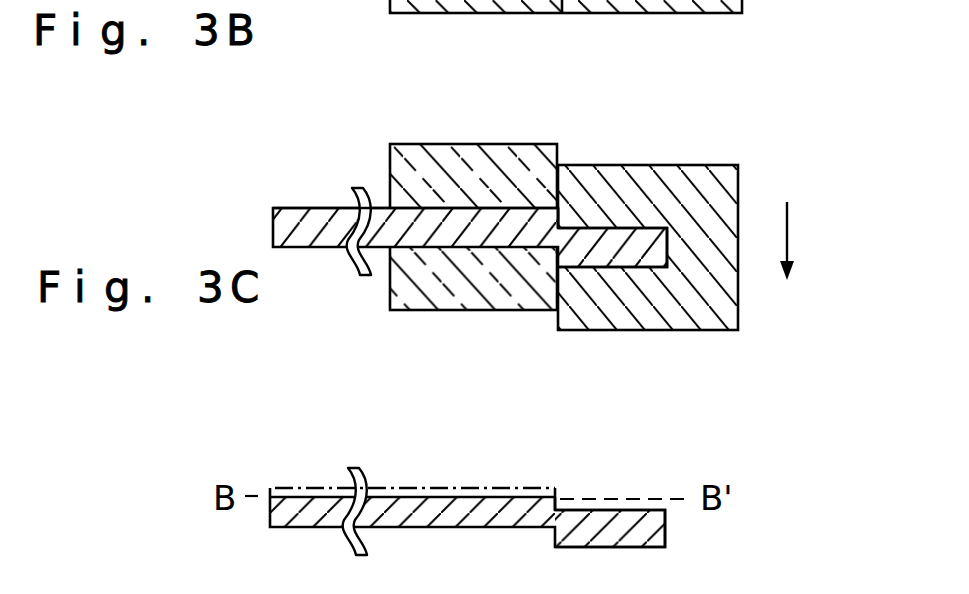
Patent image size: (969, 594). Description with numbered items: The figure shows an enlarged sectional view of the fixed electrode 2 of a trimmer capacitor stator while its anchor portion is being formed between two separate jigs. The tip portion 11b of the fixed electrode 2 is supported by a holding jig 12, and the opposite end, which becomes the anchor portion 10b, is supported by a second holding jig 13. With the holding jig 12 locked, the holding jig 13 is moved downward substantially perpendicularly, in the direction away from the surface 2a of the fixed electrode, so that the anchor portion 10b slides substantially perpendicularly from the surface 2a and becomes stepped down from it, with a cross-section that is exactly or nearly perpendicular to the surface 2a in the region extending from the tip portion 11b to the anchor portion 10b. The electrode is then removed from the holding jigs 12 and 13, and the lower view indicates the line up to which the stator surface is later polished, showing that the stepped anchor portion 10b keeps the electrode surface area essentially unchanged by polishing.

The fixed electrode 2 is at (318, 212).
The surface of the fixed electrode 2a is at (500, 208).
The tip portion 11b is at (562, 215).
The anchor portion 10b is at (647, 237).
The holding jig 12 is at (412, 155).
The holding jig 13 is at (720, 290).